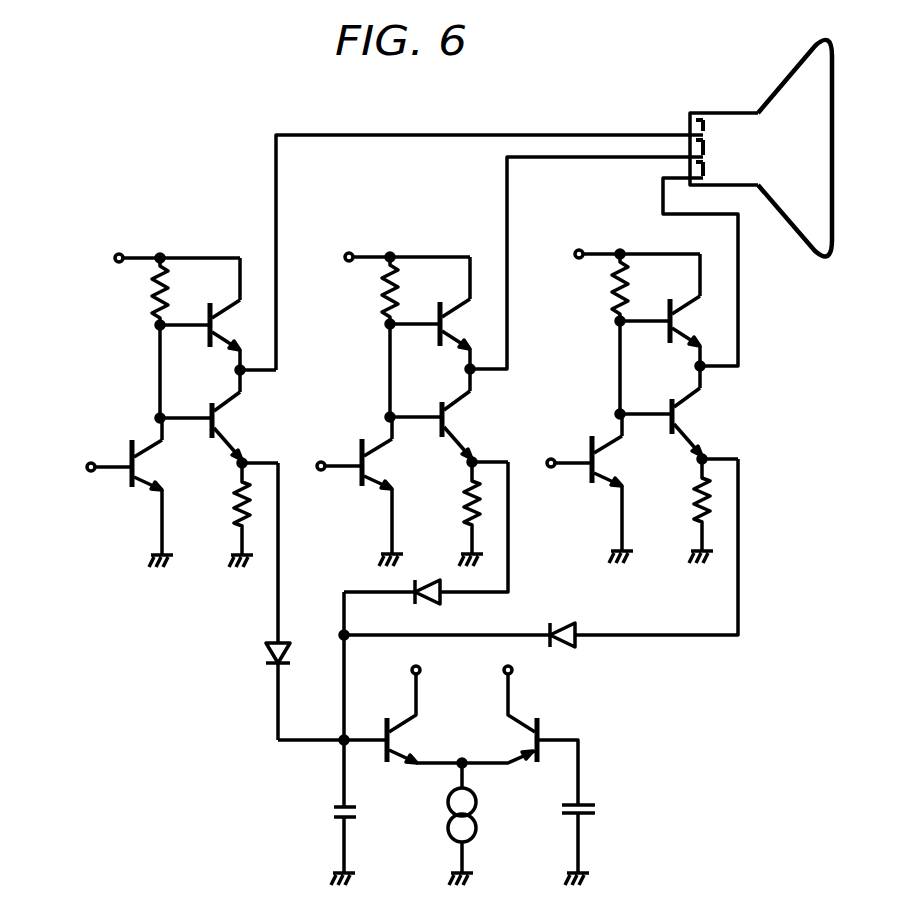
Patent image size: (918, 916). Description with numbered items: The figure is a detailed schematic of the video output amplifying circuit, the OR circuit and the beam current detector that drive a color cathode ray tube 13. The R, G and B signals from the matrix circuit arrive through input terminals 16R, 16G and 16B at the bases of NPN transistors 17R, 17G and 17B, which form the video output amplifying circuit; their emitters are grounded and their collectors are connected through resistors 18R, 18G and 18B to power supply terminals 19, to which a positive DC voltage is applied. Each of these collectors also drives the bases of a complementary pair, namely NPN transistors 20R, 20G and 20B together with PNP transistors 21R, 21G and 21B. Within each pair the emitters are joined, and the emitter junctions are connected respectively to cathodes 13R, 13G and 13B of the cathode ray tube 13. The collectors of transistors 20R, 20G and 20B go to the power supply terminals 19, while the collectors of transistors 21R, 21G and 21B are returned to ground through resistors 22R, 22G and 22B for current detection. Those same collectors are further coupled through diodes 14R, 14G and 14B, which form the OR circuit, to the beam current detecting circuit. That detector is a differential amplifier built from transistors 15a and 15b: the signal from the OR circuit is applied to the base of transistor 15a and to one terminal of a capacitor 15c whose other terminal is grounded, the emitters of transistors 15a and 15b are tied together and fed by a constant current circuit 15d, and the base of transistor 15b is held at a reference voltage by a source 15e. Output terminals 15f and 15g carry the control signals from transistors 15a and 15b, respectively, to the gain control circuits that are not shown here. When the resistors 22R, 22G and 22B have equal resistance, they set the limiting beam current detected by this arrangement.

The color cathode ray tube 13 is at (832, 147).
The cathode 13R is at (712, 125).
The cathode 13G is at (712, 148).
The cathode 13B is at (705, 186).
The power supply terminal 19 is at (119, 253).
The resistor 18R is at (152, 300).
The resistor 18G is at (382, 299).
The resistor 18B is at (612, 296).
The NPN transistor 20R is at (210, 340).
The NPN transistor 20G is at (440, 339).
The NPN transistor 20B is at (670, 336).
The PNP transistor 21R is at (232, 426).
The PNP transistor 21G is at (462, 425).
The PNP transistor 21B is at (692, 422).
The NPN transistor 17R is at (140, 472).
The NPN transistor 17G is at (370, 471).
The NPN transistor 17B is at (600, 468).
The input terminal 16R is at (92, 473).
The input terminal 16G is at (322, 472).
The input terminal 16B is at (552, 469).
The resistor 22R is at (238, 512).
The resistor 22G is at (468, 511).
The resistor 22B is at (698, 508).
The diode 14R is at (272, 668).
The diode 14G is at (440, 606).
The diode 14B is at (575, 640).
The transistor 15a is at (385, 722).
The transistor 15b is at (540, 755).
The capacitor 15c is at (338, 822).
The constant current circuit 15d is at (450, 838).
The source 15e is at (576, 822).
The output terminal 15f is at (420, 672).
The output terminal 15g is at (512, 672).